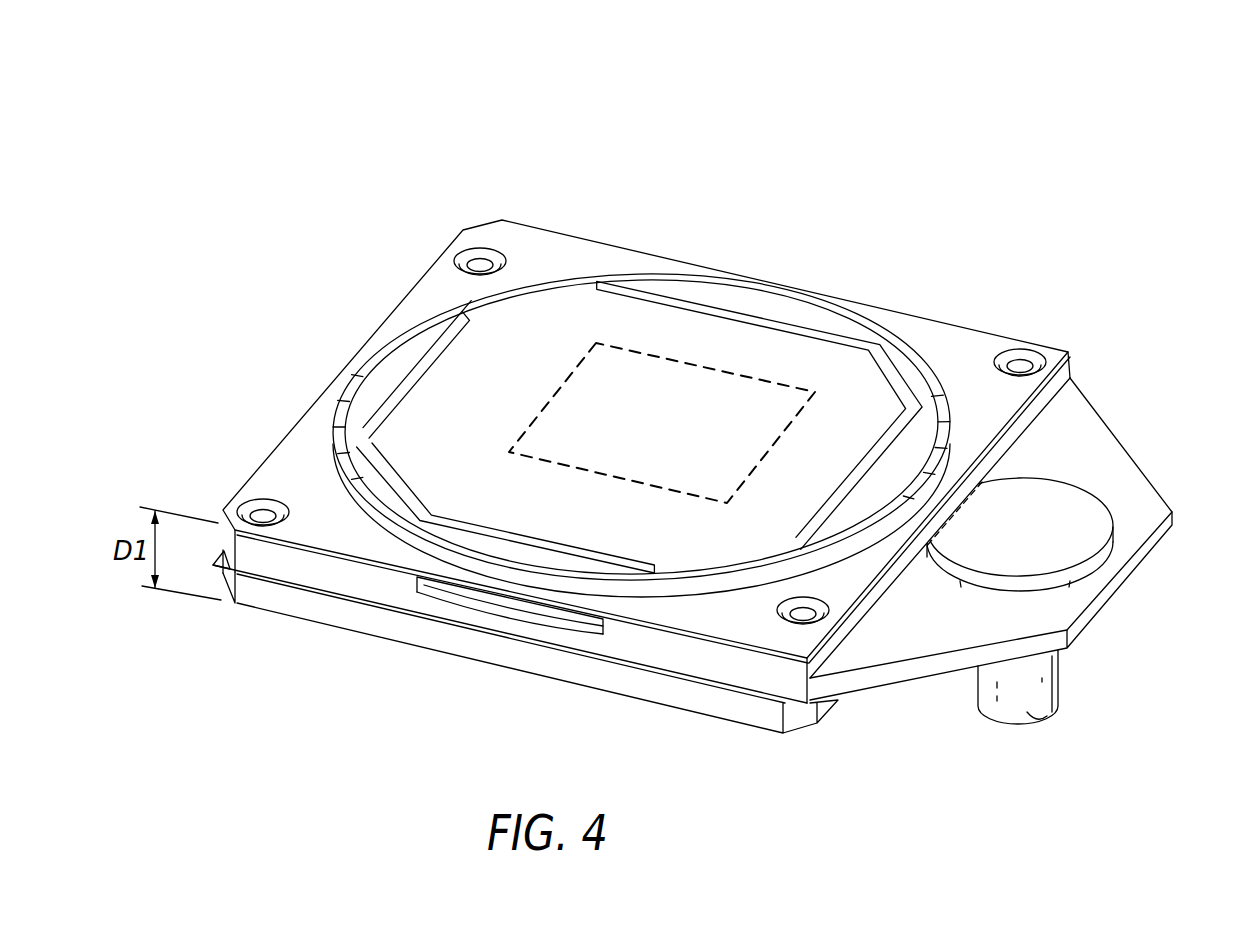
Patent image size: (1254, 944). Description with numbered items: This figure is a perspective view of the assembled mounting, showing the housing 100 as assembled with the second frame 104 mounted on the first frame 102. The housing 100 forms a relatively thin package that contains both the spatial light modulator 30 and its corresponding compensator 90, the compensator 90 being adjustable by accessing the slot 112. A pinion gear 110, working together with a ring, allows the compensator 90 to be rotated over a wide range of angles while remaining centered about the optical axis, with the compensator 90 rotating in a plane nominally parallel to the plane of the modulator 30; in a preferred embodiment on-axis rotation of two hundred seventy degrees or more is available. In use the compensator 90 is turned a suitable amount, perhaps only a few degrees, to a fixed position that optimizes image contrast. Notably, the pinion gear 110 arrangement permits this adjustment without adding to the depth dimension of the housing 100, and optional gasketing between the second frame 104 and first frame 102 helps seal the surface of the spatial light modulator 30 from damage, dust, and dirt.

The housing 100 is at (292, 180).
The second frame 104 is at (387, 326).
The first frame 102 is at (453, 648).
The compensator 90 is at (647, 303).
The spatial light modulator 30 is at (790, 383).
The pinion gear 110 is at (1100, 508).
The slot 112 is at (1032, 714).